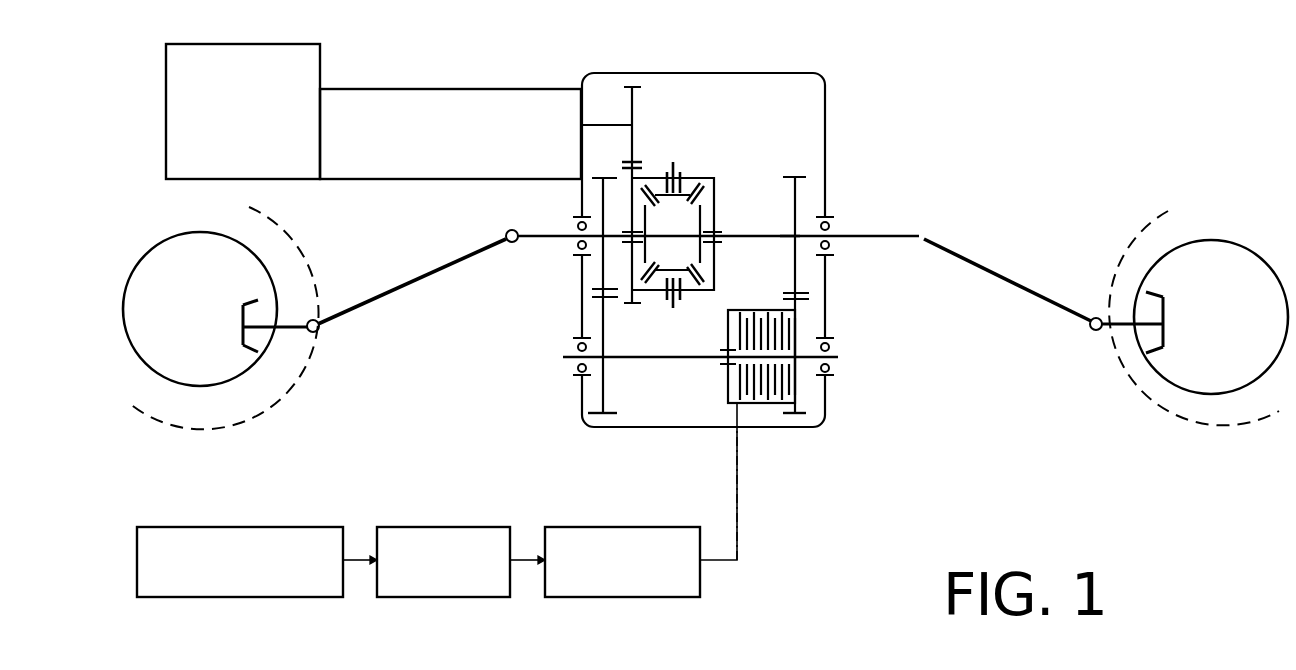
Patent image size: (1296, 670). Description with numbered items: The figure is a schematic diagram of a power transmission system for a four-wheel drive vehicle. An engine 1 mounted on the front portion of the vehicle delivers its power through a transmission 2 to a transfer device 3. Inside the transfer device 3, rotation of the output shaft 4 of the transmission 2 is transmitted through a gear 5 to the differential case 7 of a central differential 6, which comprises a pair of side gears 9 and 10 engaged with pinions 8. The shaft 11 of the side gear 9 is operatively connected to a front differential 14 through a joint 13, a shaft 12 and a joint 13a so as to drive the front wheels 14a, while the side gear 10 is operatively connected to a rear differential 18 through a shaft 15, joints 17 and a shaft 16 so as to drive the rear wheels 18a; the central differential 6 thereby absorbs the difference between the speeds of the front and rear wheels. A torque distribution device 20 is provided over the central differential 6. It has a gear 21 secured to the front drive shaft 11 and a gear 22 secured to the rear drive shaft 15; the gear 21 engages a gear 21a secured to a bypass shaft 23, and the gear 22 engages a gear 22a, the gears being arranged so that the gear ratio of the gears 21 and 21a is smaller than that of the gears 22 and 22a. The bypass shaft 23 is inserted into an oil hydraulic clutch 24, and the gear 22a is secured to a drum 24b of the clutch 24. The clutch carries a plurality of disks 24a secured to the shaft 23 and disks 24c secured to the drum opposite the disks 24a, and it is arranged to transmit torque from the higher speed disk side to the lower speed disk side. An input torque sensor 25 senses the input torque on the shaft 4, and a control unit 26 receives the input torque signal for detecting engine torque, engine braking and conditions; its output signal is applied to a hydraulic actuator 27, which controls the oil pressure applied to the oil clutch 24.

The engine 1 is at (293, 44).
The transmission 2 is at (456, 89).
The transfer device 3 is at (755, 73).
The output shaft 4 is at (618, 124).
The gear 5 is at (634, 112).
The central differential 6 is at (684, 177).
The differential case 7 is at (716, 198).
The pinions 8 is at (641, 165).
The side gear 9 is at (655, 215).
The side gear 10 is at (672, 232).
The shaft 11 is at (549, 233).
The shaft 12 is at (393, 290).
The joint 13 is at (513, 244).
The joint 13a is at (317, 331).
The front differential 14 is at (232, 382).
The front wheels 14a is at (266, 405).
The shaft 15 is at (883, 233).
The shaft 16 is at (995, 272).
The joints 17 is at (1089, 332).
The rear differential 18 is at (1155, 267).
The rear wheels 18a is at (1148, 415).
The torque distribution device 20 is at (597, 377).
The gear 21 is at (600, 264).
The gear 21a is at (612, 417).
The gear 22 is at (800, 176).
The gear 22a is at (803, 418).
The bypass shaft 23 is at (648, 356).
The oil hydraulic clutch 24 is at (727, 370).
The disks 24a is at (752, 336).
The drum 24b is at (768, 406).
The disks 24c is at (786, 328).
The input torque sensor 25 is at (285, 598).
The control unit 26 is at (447, 598).
The hydraulic actuator 27 is at (635, 598).